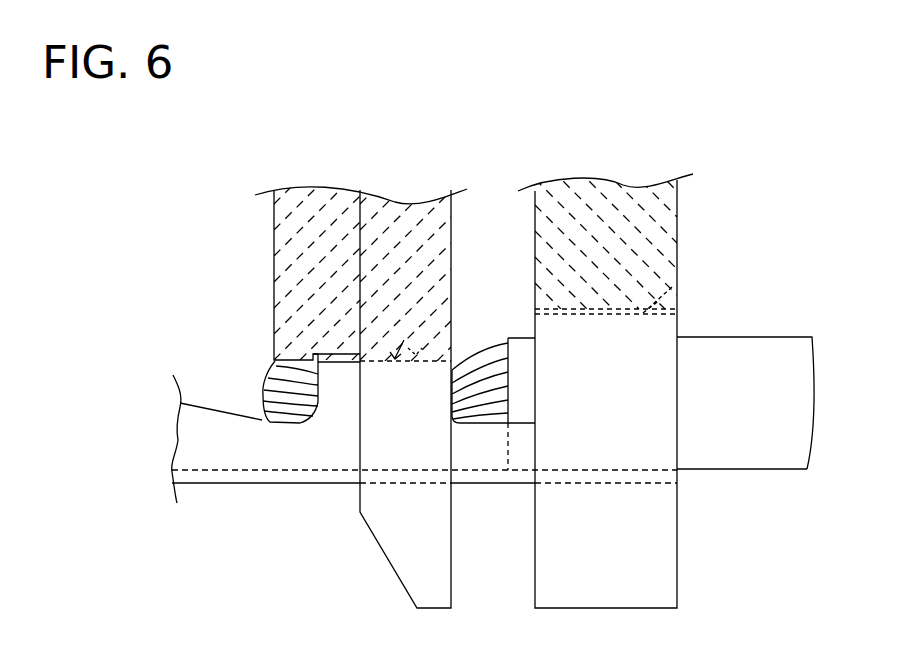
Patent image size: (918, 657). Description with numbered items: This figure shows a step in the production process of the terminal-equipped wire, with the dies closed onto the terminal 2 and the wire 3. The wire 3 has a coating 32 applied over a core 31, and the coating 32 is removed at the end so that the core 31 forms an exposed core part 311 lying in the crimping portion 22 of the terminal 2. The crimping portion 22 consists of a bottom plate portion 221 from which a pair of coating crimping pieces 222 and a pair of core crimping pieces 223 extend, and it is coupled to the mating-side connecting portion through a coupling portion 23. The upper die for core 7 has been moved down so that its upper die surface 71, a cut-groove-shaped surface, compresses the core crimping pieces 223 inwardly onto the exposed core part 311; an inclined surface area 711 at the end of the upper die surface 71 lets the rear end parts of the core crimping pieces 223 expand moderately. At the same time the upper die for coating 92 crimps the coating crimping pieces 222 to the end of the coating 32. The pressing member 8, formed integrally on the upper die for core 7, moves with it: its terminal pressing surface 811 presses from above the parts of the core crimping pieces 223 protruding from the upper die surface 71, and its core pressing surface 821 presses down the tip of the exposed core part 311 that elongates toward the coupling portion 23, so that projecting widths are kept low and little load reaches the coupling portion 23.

The terminal 2 is at (213, 386).
The crimping portion 22 is at (481, 505).
The bottom plate portion 221 is at (332, 485).
The core crimping pieces 223 is at (420, 364).
The coupling portion 23 is at (208, 455).
The wire 3 is at (773, 337).
The core 31 is at (493, 360).
The exposed core part 311 is at (483, 357).
The coating 32 is at (712, 458).
The upper die for core 7 is at (451, 247).
The upper die surface 71 is at (372, 365).
The inclined surface area 711 is at (440, 363).
The pressing member 8 is at (273, 292).
The terminal pressing surface 811 is at (335, 358).
The core pressing surface 821 is at (273, 366).
The upper die for coating 92 is at (675, 223).
The coating crimping pieces 222 is at (673, 286).